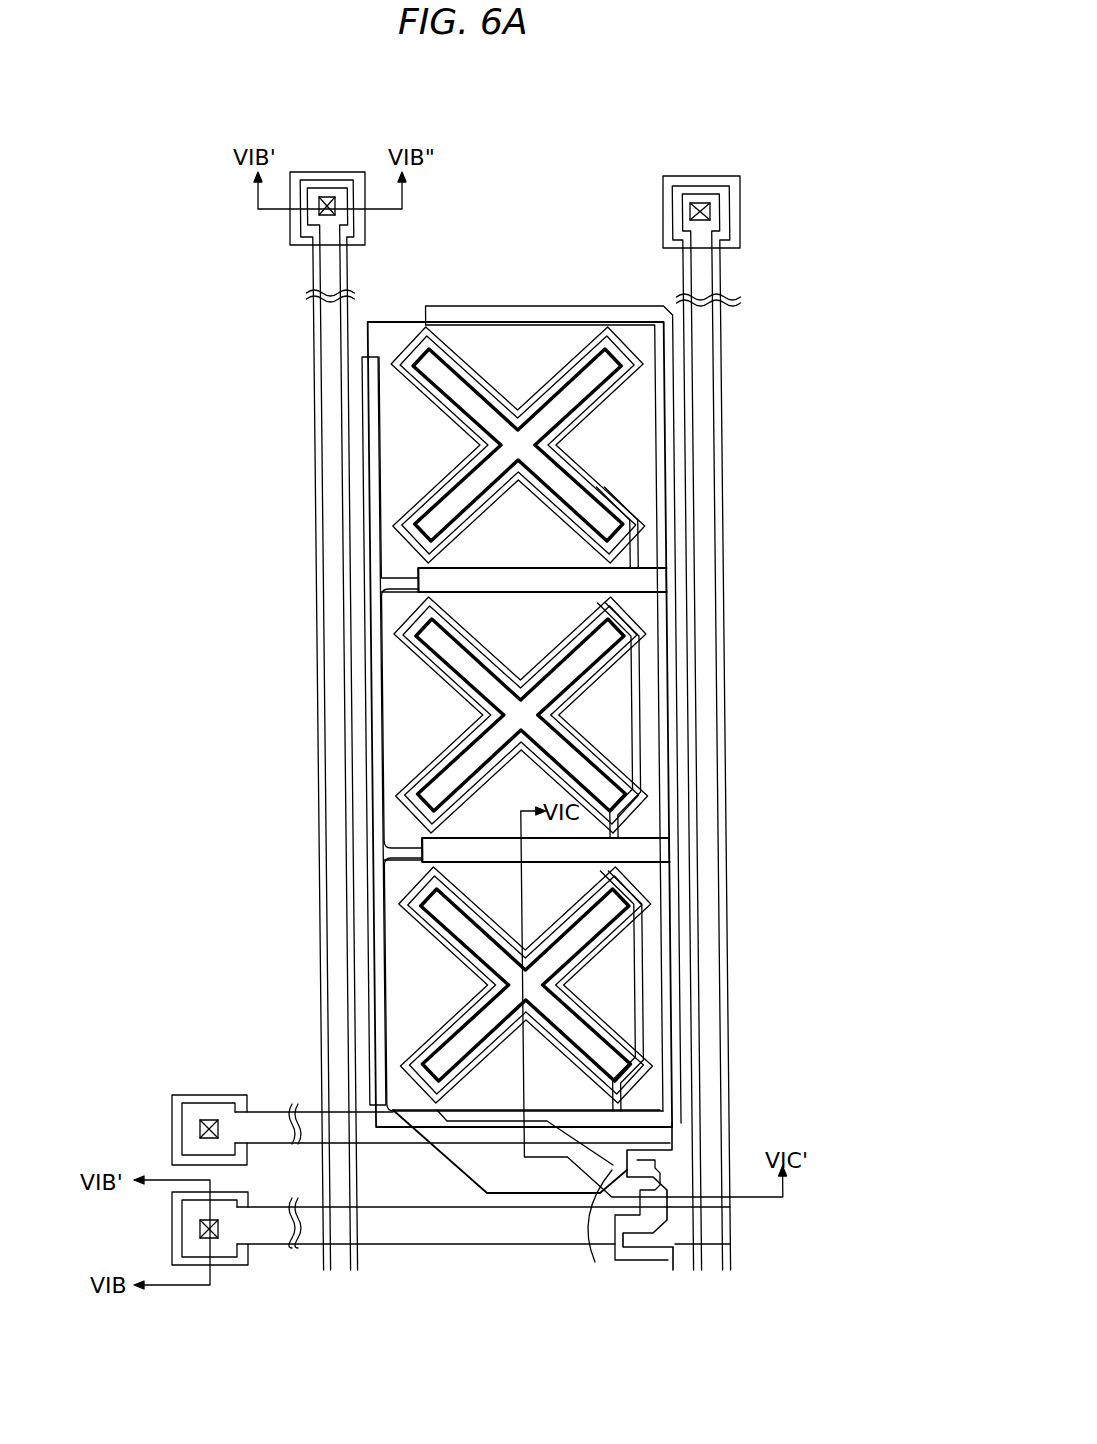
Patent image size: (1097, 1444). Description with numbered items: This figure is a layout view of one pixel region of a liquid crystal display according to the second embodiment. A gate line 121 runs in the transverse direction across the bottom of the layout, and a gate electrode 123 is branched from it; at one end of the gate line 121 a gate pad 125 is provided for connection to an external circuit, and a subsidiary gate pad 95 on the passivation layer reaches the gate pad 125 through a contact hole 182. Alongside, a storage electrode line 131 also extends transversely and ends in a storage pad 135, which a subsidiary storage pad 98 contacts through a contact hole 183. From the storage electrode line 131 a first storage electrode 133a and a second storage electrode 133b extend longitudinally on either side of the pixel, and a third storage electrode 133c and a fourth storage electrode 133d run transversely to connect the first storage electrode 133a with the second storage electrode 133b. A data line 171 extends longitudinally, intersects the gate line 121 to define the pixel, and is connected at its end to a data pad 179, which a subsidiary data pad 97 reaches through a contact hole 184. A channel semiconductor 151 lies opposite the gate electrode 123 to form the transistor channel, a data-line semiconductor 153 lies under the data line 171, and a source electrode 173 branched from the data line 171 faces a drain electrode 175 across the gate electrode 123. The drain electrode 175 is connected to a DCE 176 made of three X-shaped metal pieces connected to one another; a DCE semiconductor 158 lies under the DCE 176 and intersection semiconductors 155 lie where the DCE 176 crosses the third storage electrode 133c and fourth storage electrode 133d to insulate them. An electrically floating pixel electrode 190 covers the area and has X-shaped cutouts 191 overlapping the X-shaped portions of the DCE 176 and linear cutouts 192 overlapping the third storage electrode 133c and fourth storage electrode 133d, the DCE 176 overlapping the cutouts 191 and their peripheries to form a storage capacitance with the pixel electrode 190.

The subsidiary data pad 97 is at (348, 172).
The data pad 179 is at (315, 172).
The contact hole 184 is at (335, 212).
The data line 171 is at (725, 928).
The data-line semiconductor 153 is at (722, 683).
The second storage electrode 133b is at (657, 1028).
The first storage electrode 133a is at (366, 940).
The DCE 176 is at (625, 498).
The pixel electrode 190 is at (648, 734).
The linear cutout 192 is at (530, 595).
The DCE semiconductor 158 is at (608, 485).
The X-shaped cutout 191 is at (548, 447).
The fourth storage electrode 133d is at (512, 582).
The third storage electrode 133c is at (495, 850).
The intersection semiconductor 155 is at (648, 577).
The subsidiary storage pad 98 is at (172, 1115).
The storage pad 135 is at (178, 1140).
The contact hole 183 is at (215, 1125).
The subsidiary gate pad 95 is at (240, 1265).
The gate line 121 is at (537, 1244).
The gate pad 125 is at (222, 1265).
The contact hole 182 is at (200, 1230).
The storage electrode line 131 is at (548, 1110).
The drain electrode 175 is at (600, 1195).
The source electrode 173 is at (700, 1183).
The gate electrode 123 is at (688, 1205).
The channel semiconductor 151 is at (612, 1240).